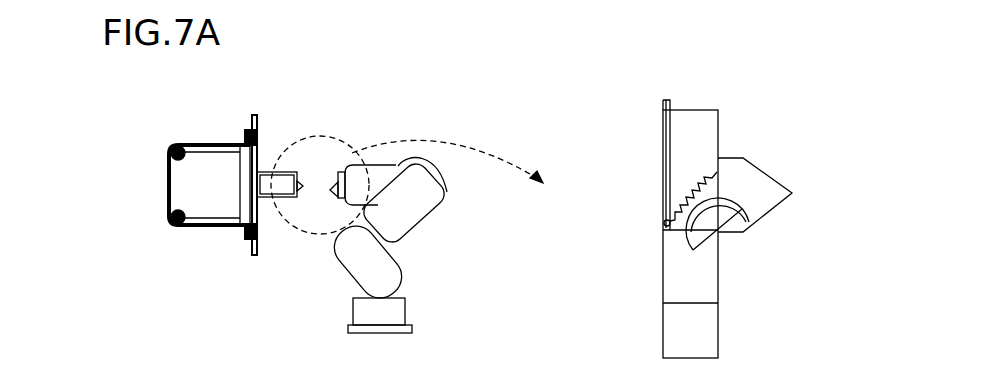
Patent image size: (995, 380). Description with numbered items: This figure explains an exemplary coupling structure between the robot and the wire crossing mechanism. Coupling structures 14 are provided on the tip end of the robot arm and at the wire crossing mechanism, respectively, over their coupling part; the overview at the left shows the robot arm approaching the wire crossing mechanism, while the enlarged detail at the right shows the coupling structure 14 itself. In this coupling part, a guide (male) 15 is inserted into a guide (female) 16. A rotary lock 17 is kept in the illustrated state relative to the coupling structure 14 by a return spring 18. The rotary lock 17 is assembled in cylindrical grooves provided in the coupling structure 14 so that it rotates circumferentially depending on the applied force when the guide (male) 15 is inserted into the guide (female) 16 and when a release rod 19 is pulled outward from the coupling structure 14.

The coupling structure 14 is at (628, 77).
The guide (male) 15 is at (763, 170).
The guide (female) 16 is at (663, 280).
The rotary lock 17 is at (703, 243).
The return spring 18 is at (690, 210).
The release rod 19 is at (670, 102).